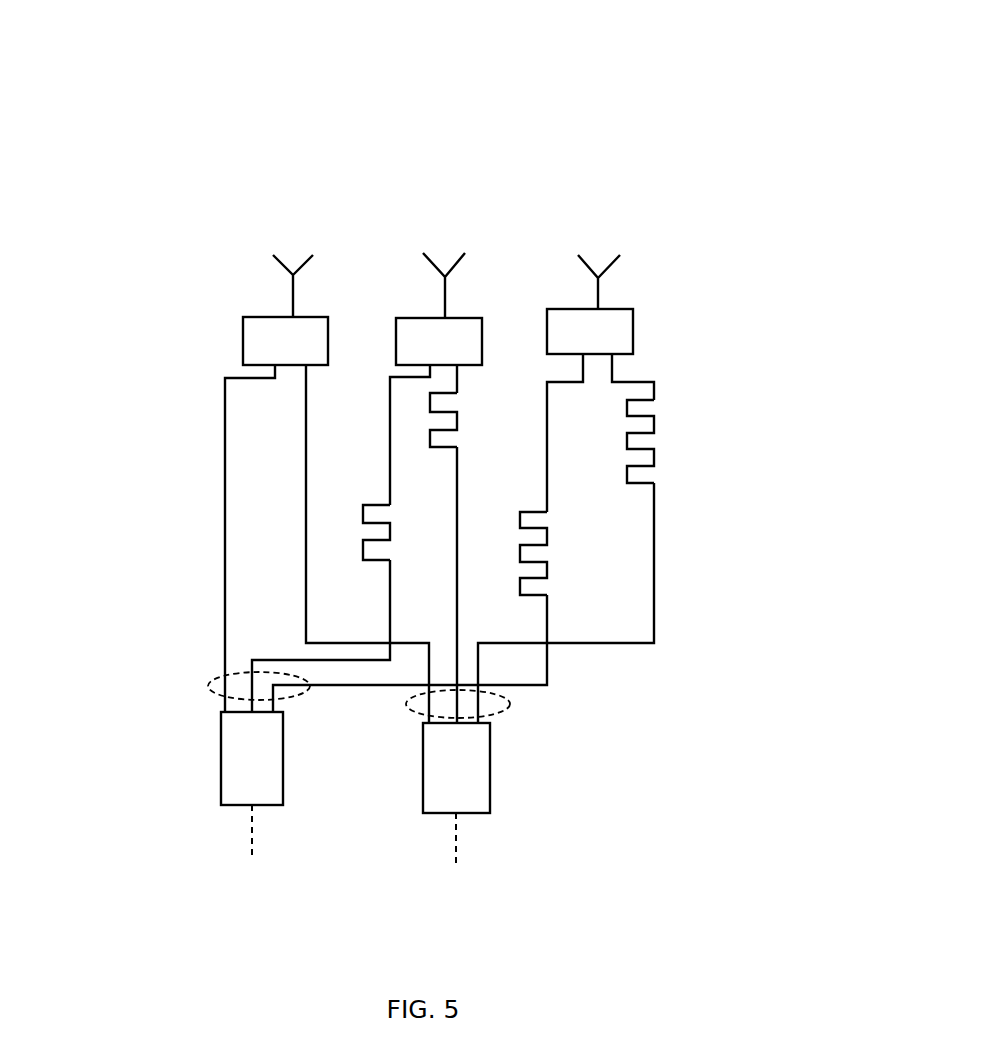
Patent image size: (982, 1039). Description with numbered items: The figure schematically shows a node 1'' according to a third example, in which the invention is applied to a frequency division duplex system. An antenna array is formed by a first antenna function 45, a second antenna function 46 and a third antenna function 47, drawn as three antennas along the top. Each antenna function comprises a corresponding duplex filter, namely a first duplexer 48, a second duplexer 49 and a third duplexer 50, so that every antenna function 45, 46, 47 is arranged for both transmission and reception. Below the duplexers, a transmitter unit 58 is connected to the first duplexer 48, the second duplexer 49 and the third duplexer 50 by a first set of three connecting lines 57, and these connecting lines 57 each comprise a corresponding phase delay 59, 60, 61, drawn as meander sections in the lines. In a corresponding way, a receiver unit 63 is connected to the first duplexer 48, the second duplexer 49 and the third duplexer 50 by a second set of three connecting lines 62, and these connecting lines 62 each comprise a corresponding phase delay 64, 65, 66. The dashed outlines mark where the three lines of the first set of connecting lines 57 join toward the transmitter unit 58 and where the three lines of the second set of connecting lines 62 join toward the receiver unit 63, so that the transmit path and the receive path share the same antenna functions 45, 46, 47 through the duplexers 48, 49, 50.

The antenna arrangement / front-end system 1'' is at (447, 445).
The first antenna function 45 is at (290, 248).
The second antenna function 46 is at (463, 240).
The third antenna function 47 is at (607, 245).
The first duplexer 48 is at (262, 318).
The second duplexer 49 is at (430, 318).
The third duplexer 50 is at (633, 310).
The phase delay 59 is at (213, 560).
The phase delay 64 is at (288, 432).
The phase delay 60 is at (343, 515).
The phase delay 65 is at (488, 418).
The phase delay 61 is at (573, 543).
The phase delay 66 is at (677, 423).
The first set of three connecting lines 57 is at (240, 672).
The second set of three connecting lines 62 is at (503, 703).
The transmitter unit 58 is at (238, 747).
The receiver unit 63 is at (468, 785).